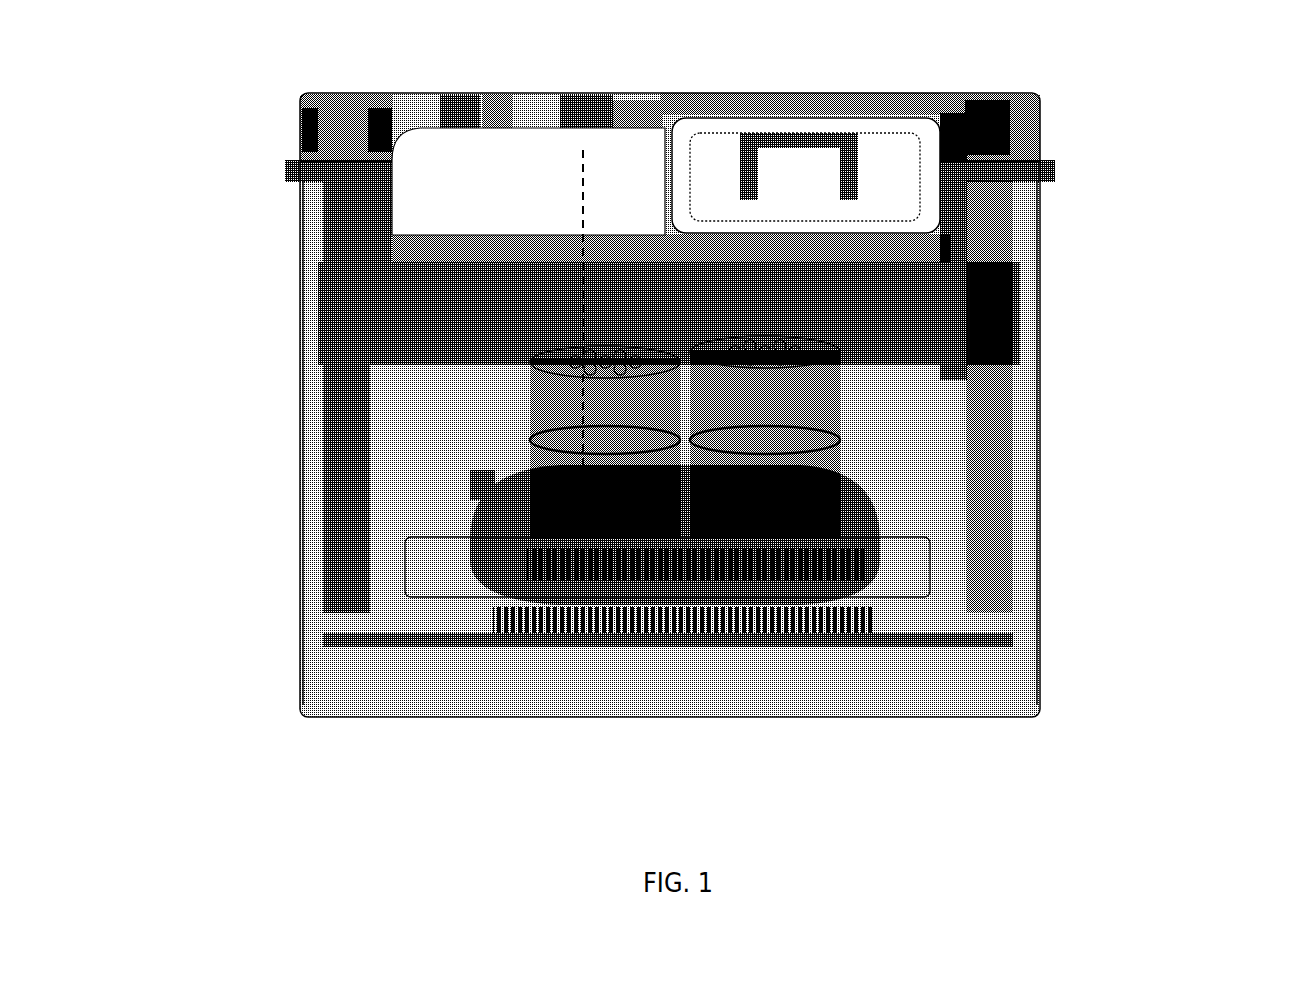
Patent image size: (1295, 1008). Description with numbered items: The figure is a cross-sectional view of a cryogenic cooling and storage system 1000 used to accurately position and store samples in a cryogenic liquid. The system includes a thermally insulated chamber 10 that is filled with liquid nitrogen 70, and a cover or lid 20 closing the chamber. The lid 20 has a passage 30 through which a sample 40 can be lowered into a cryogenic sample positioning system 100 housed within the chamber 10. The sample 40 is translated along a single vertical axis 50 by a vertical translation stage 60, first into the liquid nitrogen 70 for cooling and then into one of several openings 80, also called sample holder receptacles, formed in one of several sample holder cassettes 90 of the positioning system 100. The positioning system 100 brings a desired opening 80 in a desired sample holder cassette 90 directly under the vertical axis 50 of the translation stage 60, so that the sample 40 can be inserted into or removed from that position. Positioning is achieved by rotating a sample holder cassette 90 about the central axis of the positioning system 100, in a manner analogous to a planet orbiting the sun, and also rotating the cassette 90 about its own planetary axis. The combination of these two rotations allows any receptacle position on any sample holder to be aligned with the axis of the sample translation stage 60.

The cryogenic cooling and storage system 1000 is at (153, 53).
The chamber 10 is at (310, 692).
The cover or lid 20 is at (923, 208).
The passage 30 is at (555, 180).
The sample 40 is at (580, 356).
The axis 50 is at (580, 247).
The vertical translation stage 60 is at (585, 105).
The liquid nitrogen 70 is at (905, 335).
The openings 80 is at (560, 410).
The sample holder cassettes 90 is at (800, 425).
The cryogenic sample positioning system 100 is at (887, 610).